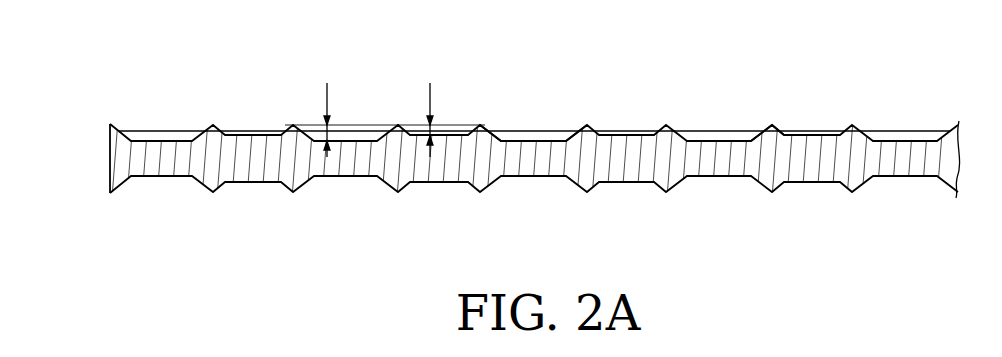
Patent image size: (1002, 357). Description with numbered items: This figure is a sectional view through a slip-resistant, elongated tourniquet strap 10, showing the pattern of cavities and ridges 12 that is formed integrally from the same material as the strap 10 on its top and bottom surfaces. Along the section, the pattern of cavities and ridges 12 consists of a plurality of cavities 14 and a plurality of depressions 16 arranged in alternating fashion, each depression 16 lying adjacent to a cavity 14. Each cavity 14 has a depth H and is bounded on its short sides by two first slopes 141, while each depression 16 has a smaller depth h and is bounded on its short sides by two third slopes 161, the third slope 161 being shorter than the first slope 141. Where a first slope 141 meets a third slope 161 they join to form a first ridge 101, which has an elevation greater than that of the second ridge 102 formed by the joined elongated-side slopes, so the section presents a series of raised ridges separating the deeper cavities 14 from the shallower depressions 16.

The strap 10 is at (537, 129).
The pattern of cavities and ridges 12 is at (531, 100).
The cavity 14 is at (520, 93).
The depression 16 is at (534, 158).
The first ridge 101 is at (772, 127).
The second ridge 102 is at (920, 130).
The first slope 141 is at (768, 128).
The third slope 161 is at (778, 131).